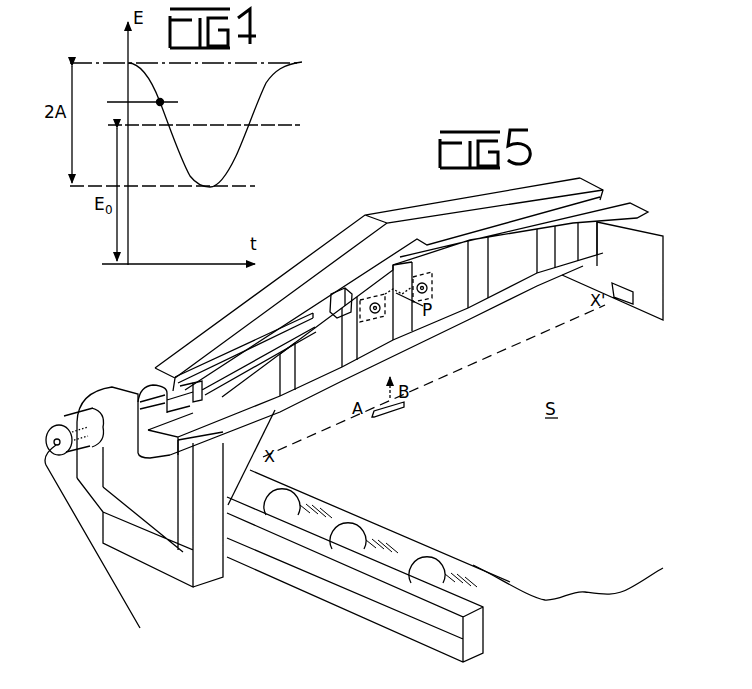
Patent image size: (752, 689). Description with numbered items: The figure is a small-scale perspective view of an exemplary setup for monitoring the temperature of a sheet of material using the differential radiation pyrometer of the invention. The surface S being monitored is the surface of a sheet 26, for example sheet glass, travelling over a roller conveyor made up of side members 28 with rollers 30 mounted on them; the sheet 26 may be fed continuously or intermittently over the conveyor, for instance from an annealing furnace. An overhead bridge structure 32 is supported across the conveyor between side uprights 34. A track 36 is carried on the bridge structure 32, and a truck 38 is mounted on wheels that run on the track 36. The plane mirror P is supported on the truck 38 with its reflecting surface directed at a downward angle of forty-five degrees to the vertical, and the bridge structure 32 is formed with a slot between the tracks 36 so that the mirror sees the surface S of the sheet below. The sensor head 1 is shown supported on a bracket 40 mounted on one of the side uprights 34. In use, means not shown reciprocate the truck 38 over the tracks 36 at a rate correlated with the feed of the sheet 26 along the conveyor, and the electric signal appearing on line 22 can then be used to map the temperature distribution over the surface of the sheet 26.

The sensor head 1 is at (77, 423).
The line 22 is at (122, 612).
The sheet 26 is at (578, 587).
The side members 28 is at (474, 642).
The rollers 30 is at (423, 577).
The overhead bridge structure 32 is at (323, 252).
The side uprights 34 is at (183, 570).
The track 36 is at (210, 380).
The truck 38 is at (403, 275).
The bracket 40 is at (117, 393).